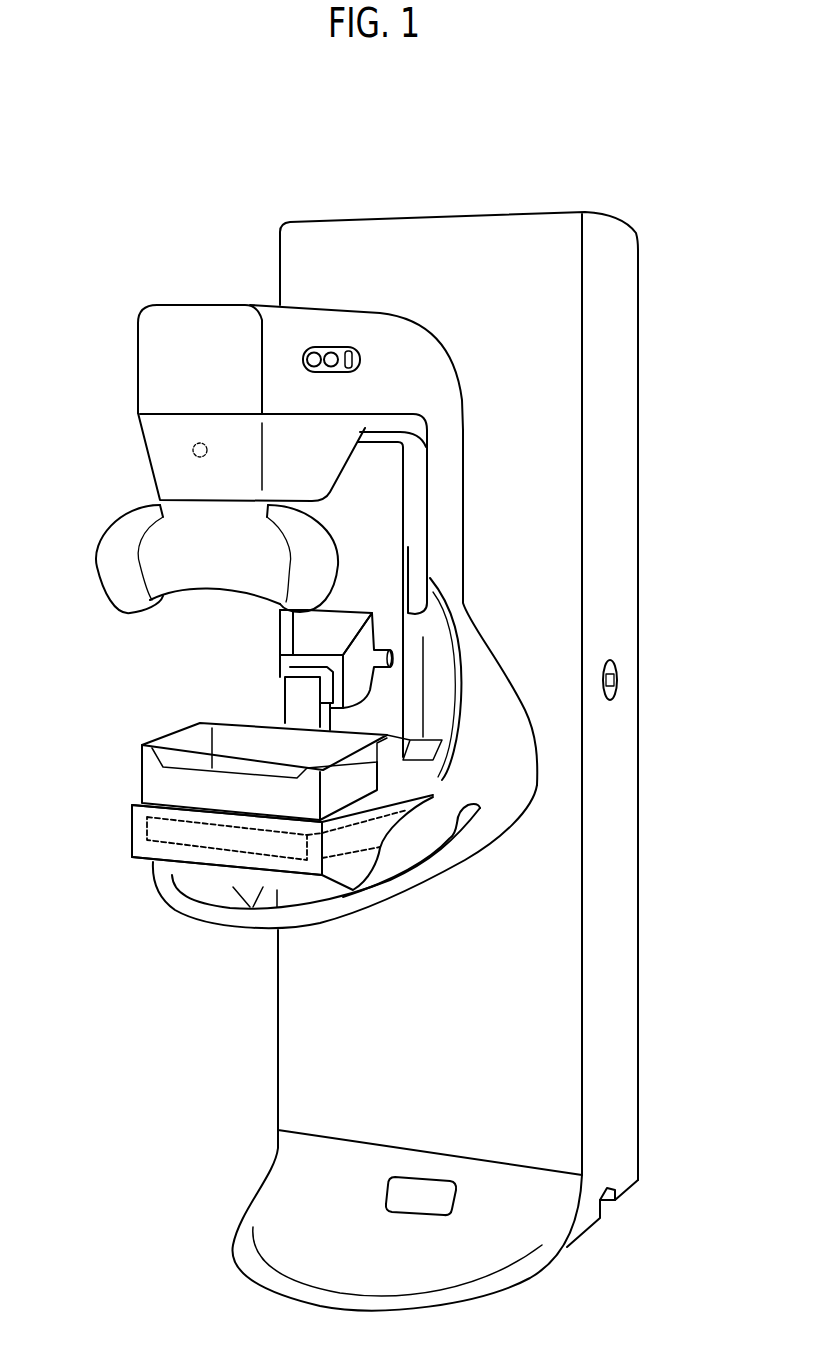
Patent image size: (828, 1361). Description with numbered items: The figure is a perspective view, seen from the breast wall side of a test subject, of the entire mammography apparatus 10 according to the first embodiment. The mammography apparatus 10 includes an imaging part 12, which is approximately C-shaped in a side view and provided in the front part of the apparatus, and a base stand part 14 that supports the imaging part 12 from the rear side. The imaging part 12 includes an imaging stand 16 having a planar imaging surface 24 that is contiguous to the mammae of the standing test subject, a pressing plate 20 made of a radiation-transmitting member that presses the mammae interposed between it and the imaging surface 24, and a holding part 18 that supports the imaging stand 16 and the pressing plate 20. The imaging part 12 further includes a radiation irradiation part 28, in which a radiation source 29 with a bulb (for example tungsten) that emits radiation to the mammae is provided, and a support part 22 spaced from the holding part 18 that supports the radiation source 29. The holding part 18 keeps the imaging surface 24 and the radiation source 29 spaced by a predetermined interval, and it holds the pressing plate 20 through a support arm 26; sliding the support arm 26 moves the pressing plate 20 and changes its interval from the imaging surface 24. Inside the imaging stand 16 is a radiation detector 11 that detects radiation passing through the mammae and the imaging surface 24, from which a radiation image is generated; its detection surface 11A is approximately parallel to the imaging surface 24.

The mammography apparatus 10 is at (135, 268).
The radiation detector 11 is at (167, 848).
The detection surface 11A is at (155, 805).
The imaging part 12 is at (452, 440).
The base stand part 14 is at (630, 553).
The imaging stand 16 is at (133, 835).
The holding part 18 is at (367, 507).
The pressing plate 20 is at (178, 788).
The support part 22 is at (453, 552).
The imaging surface 24 is at (360, 808).
The support arm 26 is at (297, 697).
The radiation irradiation part 28 is at (170, 462).
The radiation source 29 is at (193, 448).